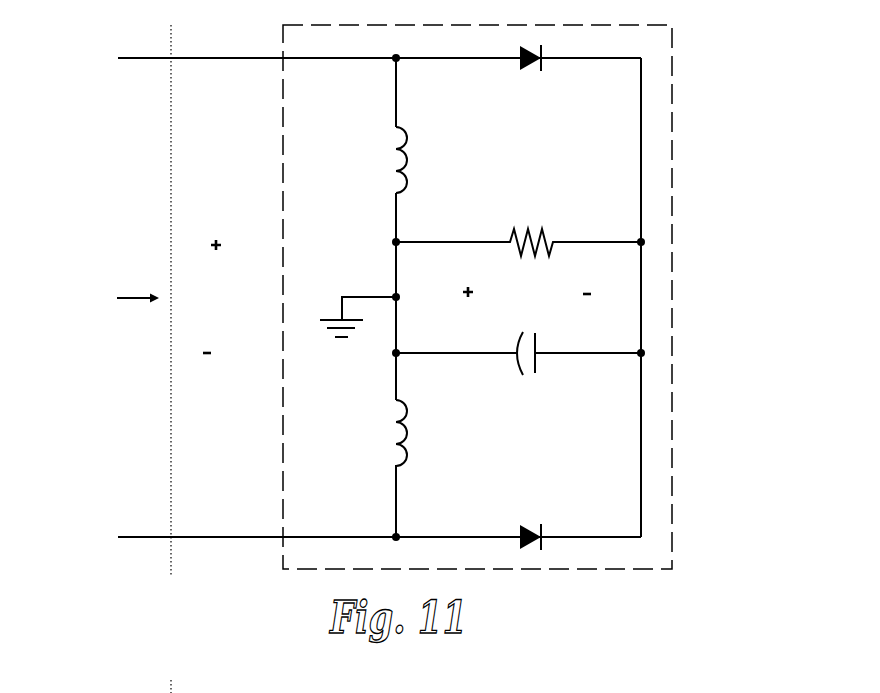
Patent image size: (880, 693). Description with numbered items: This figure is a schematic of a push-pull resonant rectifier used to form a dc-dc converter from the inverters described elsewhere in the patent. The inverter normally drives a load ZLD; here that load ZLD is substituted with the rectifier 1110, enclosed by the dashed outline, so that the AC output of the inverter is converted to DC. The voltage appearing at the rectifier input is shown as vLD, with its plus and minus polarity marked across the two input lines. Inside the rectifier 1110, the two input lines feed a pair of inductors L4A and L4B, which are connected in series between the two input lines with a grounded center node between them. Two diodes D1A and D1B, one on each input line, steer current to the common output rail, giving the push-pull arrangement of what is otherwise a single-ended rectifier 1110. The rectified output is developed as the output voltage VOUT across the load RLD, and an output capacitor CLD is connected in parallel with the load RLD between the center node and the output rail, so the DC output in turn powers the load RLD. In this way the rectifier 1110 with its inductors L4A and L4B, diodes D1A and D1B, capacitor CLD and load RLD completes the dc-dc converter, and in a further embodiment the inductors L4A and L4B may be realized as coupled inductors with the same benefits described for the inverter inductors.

The rectifier 1110 is at (524, 297).
The diode D1A is at (518, 75).
The diode D1B is at (519, 515).
The inductor L4A is at (376, 160).
The inductor L4B is at (376, 433).
The load RLD is at (518, 216).
The load capacitor CLD is at (518, 372).
The output voltage VOUT is at (527, 298).
The load ZLD is at (106, 292).
The load voltage vLD(t) vLD is at (228, 296).